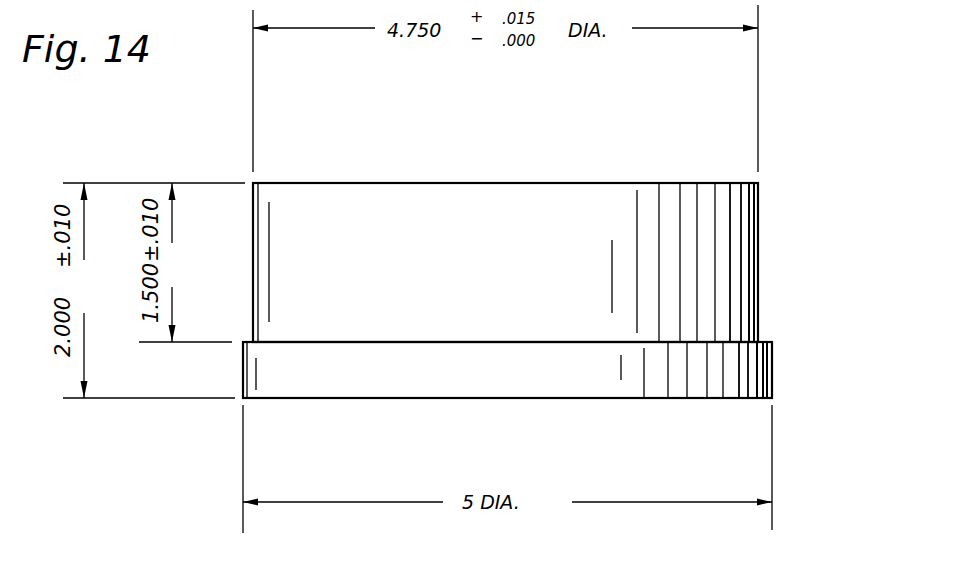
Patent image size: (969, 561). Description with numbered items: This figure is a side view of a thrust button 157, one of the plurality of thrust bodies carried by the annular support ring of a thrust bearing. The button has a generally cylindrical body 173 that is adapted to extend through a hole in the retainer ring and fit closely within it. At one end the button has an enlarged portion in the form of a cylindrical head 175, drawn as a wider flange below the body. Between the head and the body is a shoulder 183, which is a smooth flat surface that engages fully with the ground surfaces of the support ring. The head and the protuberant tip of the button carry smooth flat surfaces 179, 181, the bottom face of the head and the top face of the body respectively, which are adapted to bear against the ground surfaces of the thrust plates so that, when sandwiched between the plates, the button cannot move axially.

The thrust button 157 is at (354, 176).
The smooth flat surface 181 is at (555, 183).
The cylindrical body 173 is at (730, 242).
The shoulder 183 is at (512, 342).
The cylindrical head 175 is at (737, 372).
The smooth flat surface 179 is at (511, 400).